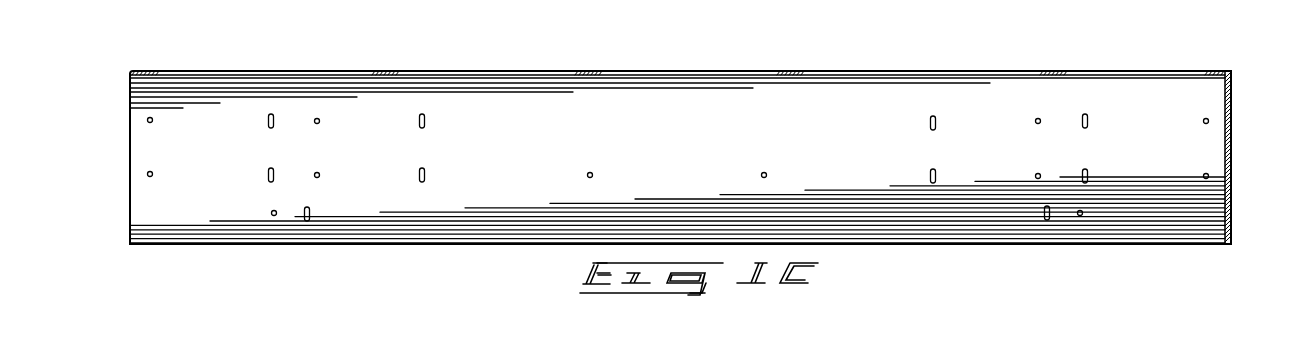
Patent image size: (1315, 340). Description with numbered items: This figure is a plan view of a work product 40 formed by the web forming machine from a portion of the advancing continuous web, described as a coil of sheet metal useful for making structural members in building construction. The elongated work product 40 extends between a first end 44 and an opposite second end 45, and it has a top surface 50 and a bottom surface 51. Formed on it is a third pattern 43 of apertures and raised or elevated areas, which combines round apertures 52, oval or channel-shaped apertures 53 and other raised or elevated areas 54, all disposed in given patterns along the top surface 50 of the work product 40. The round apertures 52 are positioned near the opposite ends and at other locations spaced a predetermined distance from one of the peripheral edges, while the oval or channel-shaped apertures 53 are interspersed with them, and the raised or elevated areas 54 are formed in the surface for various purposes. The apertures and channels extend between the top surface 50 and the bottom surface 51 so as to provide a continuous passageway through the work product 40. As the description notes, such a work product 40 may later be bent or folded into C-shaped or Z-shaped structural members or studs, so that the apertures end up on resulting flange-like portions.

The work product 40 is at (124, 165).
The third pattern 43 is at (1204, 172).
The first end 44 is at (138, 141).
The second end 45 is at (1225, 243).
The top surface 50 is at (680, 100).
The bottom surface 51 is at (893, 72).
The round apertures 52 is at (153, 123).
The oval or channel-shaped apertures 53 is at (268, 130).
The raised or elevated areas 54 is at (427, 168).